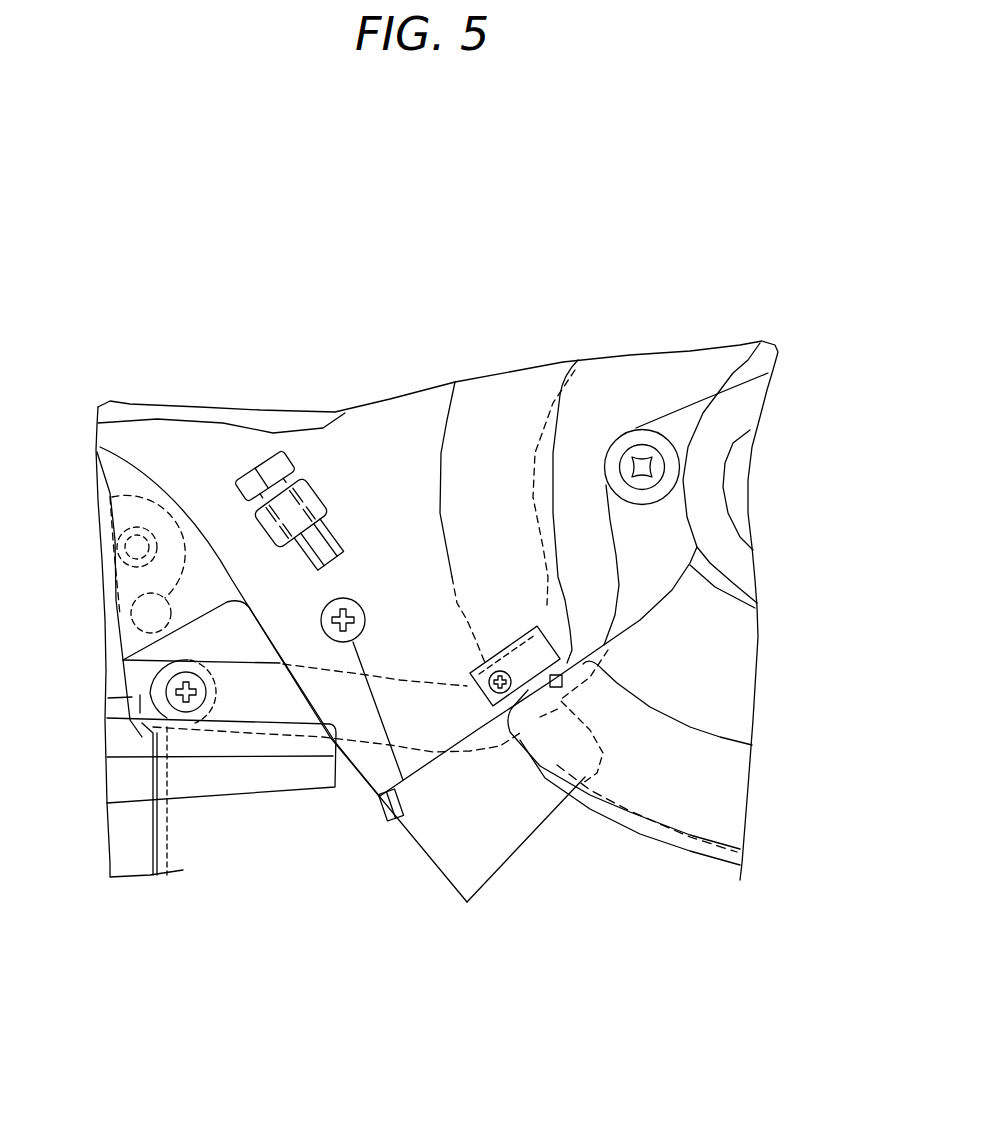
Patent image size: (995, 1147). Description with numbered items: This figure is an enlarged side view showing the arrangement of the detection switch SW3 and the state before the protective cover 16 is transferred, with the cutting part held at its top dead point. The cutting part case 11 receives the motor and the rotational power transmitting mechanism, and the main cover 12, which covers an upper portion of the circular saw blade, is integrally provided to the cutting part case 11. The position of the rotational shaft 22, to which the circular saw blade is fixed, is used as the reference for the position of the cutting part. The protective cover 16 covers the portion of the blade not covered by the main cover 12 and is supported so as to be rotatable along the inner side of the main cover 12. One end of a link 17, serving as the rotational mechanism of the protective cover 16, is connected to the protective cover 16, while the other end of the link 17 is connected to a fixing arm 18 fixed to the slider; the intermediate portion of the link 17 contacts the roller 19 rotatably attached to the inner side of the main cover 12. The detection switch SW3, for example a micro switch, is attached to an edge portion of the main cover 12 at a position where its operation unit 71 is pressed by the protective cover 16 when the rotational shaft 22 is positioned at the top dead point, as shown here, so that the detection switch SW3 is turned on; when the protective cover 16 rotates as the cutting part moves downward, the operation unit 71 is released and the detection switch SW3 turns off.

The cutting part case 11 is at (178, 433).
The main cover 12 is at (460, 743).
The protective cover 16 is at (687, 853).
The link 17 is at (563, 390).
The fixing arm 18 is at (165, 810).
The roller 19 is at (655, 430).
The rotational shaft 22 is at (733, 453).
The operation unit 71 is at (555, 688).
The detection switch SW3 is at (518, 715).